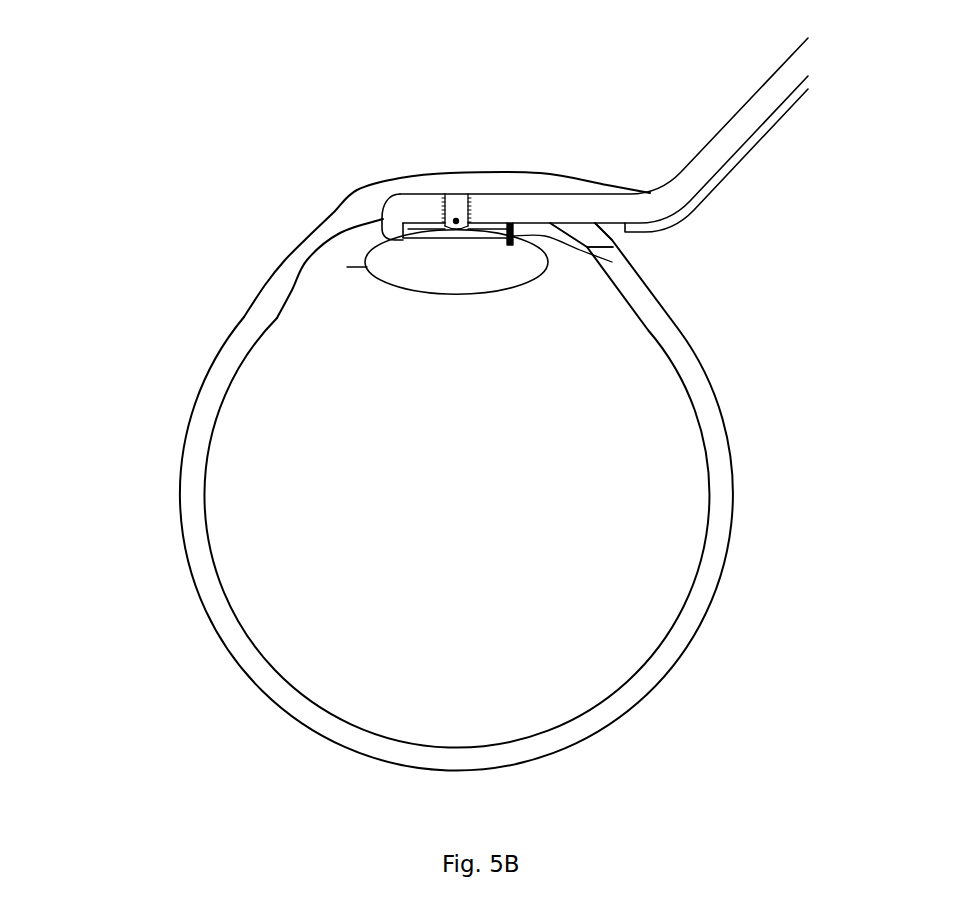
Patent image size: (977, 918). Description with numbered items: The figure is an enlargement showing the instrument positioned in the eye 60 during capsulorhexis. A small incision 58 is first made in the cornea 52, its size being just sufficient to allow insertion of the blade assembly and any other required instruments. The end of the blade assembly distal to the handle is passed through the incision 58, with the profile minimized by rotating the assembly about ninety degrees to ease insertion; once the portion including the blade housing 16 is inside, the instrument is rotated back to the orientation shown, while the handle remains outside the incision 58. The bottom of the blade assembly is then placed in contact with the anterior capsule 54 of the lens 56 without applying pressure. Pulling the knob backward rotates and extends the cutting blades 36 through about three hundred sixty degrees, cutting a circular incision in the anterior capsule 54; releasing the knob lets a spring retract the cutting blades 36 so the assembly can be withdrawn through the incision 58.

The blade housing 16 is at (485, 193).
The cutting blades 36 is at (396, 238).
The cornea 52 is at (358, 192).
The anterior capsule 54 is at (453, 230).
The lens 56 is at (540, 280).
The incision 58 is at (612, 238).
The eye 60 is at (135, 612).